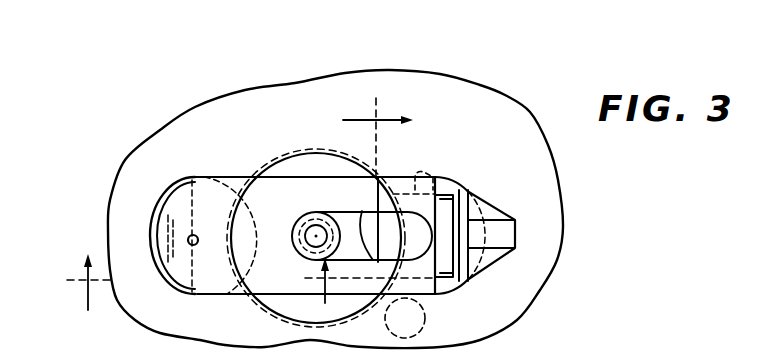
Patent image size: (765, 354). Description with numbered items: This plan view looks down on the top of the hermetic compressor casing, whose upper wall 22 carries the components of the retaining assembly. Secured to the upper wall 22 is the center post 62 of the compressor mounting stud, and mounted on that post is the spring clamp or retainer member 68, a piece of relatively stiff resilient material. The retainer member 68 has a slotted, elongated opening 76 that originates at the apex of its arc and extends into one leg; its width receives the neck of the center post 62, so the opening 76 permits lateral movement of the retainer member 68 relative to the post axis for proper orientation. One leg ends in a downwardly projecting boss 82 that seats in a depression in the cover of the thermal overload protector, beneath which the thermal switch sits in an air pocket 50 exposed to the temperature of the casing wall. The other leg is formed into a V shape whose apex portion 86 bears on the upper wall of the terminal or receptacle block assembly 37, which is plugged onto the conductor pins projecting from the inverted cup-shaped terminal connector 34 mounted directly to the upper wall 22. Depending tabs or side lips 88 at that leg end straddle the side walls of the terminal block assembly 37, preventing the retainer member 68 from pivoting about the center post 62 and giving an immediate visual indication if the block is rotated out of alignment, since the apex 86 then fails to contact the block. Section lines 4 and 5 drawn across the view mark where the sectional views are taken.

The upper wall 22 is at (493, 110).
The pocket 50 is at (170, 180).
The spring clamp or retainer member 68 is at (242, 170).
The center post 62 is at (347, 208).
The opening 76 is at (368, 218).
The boss 82 is at (197, 246).
The apex portion 86 is at (460, 187).
The terminal or receptacle block assembly 37 is at (495, 255).
The tabs or side lips 88 is at (420, 168).
The terminal connector 34 is at (406, 321).
The section line 4- 4 is at (239, 282).
The section line 5- 5 is at (378, 137).